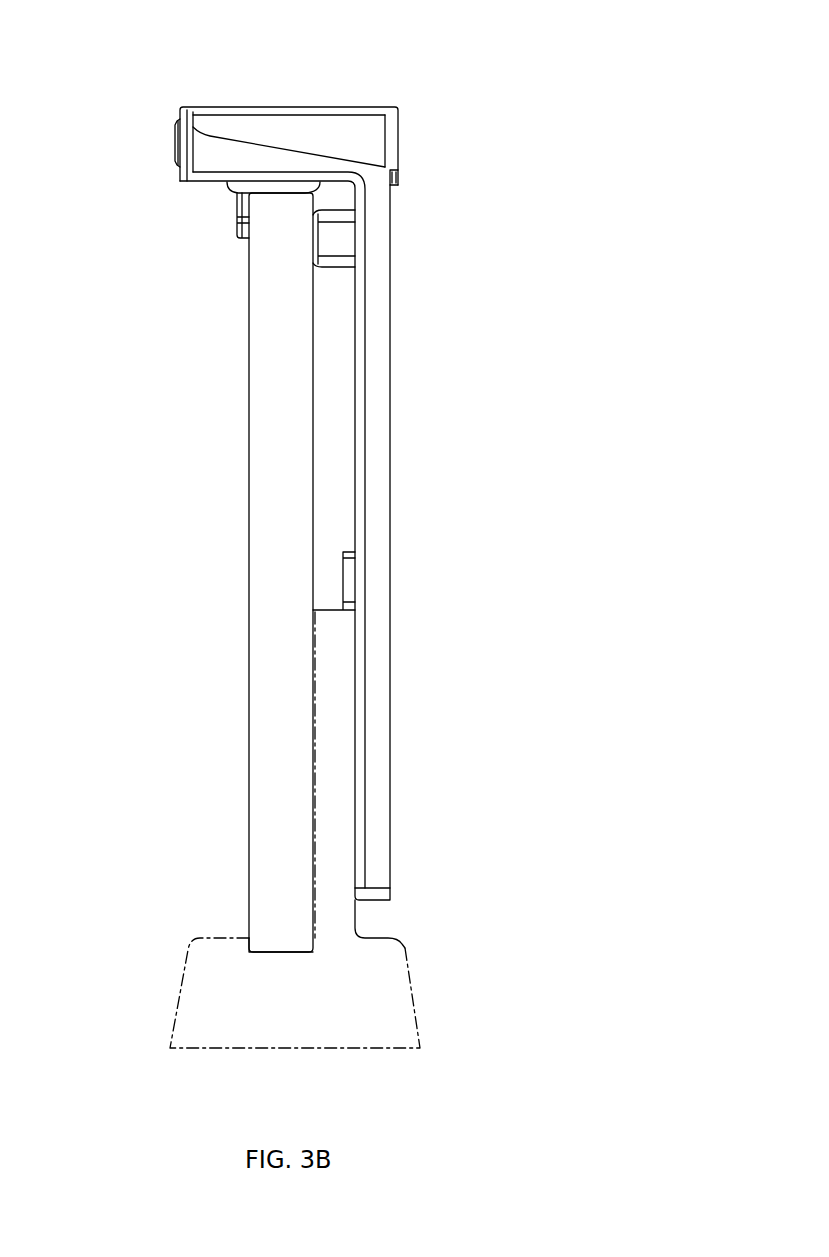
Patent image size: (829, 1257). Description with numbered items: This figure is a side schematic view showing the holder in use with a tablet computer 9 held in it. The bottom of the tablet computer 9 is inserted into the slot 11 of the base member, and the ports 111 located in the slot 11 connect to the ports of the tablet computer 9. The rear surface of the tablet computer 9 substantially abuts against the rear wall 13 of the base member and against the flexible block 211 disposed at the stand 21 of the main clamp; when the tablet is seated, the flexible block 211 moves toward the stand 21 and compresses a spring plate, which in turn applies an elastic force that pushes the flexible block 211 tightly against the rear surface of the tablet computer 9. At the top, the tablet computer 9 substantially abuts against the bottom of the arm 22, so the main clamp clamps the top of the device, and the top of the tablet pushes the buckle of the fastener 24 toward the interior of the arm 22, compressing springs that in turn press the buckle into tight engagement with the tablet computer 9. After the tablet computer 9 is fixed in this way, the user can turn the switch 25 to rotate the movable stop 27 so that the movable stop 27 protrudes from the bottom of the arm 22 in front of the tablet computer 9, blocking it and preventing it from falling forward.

The arm 22 is at (331, 108).
The switch 25 is at (177, 140).
The stand 21 is at (380, 313).
The flexible block 211 is at (343, 238).
The rear wall 13 is at (338, 698).
The tablet computer 9 is at (265, 545).
The fastener 24 is at (283, 188).
The movable stop 27 is at (237, 225).
The slot 11 is at (212, 1000).
The ports 111 is at (275, 952).